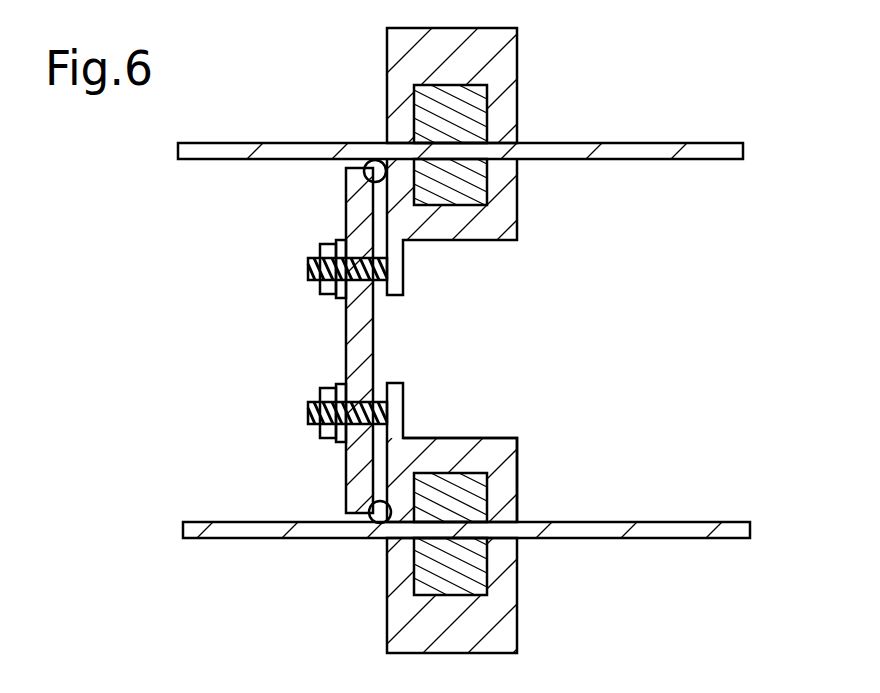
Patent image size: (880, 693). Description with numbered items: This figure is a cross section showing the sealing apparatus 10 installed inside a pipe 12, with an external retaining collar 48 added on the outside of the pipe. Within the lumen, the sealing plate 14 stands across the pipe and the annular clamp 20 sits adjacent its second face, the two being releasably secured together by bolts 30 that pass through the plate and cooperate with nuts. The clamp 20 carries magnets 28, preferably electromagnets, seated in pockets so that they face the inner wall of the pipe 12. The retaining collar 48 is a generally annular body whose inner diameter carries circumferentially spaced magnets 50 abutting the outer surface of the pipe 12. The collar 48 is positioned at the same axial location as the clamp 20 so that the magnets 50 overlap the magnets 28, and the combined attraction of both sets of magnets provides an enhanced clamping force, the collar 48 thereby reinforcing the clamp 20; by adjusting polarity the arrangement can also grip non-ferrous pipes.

The sealing apparatus 10 is at (552, 255).
The pipe 12 is at (668, 153).
The sealing plate 14 is at (358, 210).
The clamp 20 is at (510, 460).
The magnets 28 is at (450, 487).
The bolts 30 is at (308, 270).
The retaining collar 48 is at (503, 53).
The magnets 50 is at (467, 108).